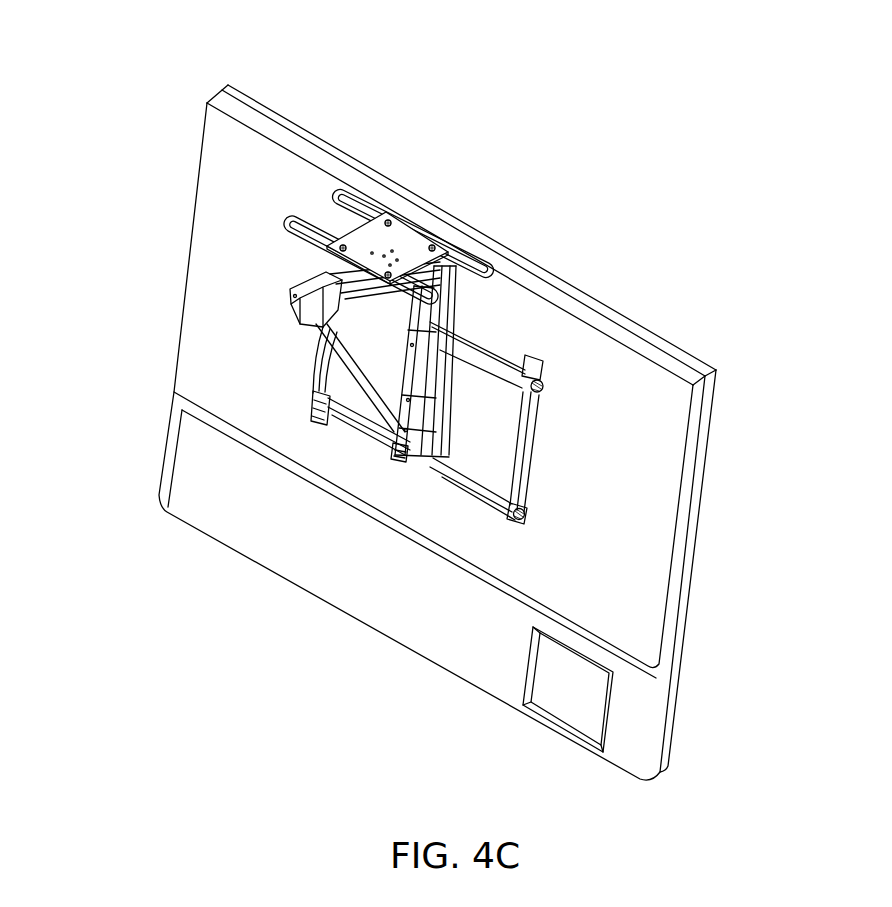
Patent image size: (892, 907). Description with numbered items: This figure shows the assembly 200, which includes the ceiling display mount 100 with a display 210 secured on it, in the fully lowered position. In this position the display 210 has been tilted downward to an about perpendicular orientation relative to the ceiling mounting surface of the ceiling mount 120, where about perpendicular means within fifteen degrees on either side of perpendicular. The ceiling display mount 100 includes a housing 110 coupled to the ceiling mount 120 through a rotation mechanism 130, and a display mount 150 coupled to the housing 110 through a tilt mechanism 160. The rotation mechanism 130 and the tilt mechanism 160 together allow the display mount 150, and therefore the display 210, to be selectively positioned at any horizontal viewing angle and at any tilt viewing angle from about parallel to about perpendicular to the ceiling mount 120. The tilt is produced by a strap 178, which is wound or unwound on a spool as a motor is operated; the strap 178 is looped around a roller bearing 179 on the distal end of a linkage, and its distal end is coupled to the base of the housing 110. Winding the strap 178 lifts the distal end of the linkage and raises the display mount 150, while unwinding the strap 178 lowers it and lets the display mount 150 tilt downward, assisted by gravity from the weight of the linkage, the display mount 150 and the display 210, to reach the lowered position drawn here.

The ceiling display mount 100 is at (568, 189).
The housing 110 is at (318, 293).
The ceiling mount 120 is at (412, 238).
The rotation mechanism 130 is at (484, 225).
The display mount 150 is at (533, 448).
The tilt mechanism 160 is at (445, 304).
The strap 178 is at (368, 391).
The roller bearing 179 is at (413, 458).
The assembly 200 is at (383, 391).
The display 210 is at (580, 609).